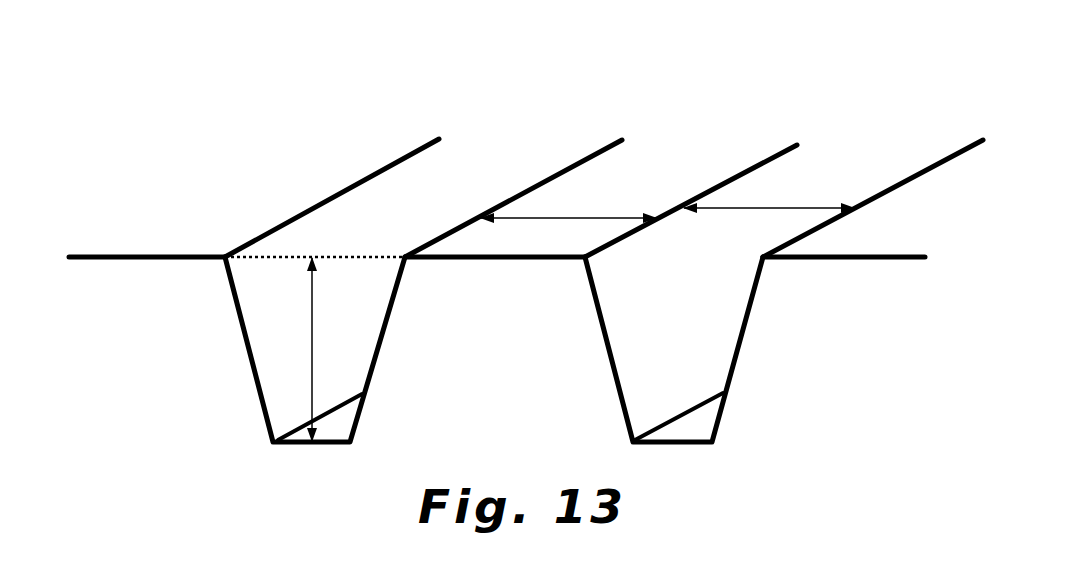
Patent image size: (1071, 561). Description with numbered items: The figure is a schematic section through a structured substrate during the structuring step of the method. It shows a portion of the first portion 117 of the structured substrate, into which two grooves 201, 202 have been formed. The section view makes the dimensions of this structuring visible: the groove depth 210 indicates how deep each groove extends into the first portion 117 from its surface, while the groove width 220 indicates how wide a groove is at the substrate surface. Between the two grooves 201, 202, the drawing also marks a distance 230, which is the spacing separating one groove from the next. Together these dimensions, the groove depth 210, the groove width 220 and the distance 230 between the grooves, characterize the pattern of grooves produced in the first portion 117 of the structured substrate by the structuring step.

The first portion of structured substrate 117 is at (622, 123).
The groove 201 is at (363, 208).
The groove 202 is at (778, 187).
The groove depth 210 is at (310, 358).
The groove width 220 is at (783, 207).
The distance between two grooves 230 is at (585, 215).